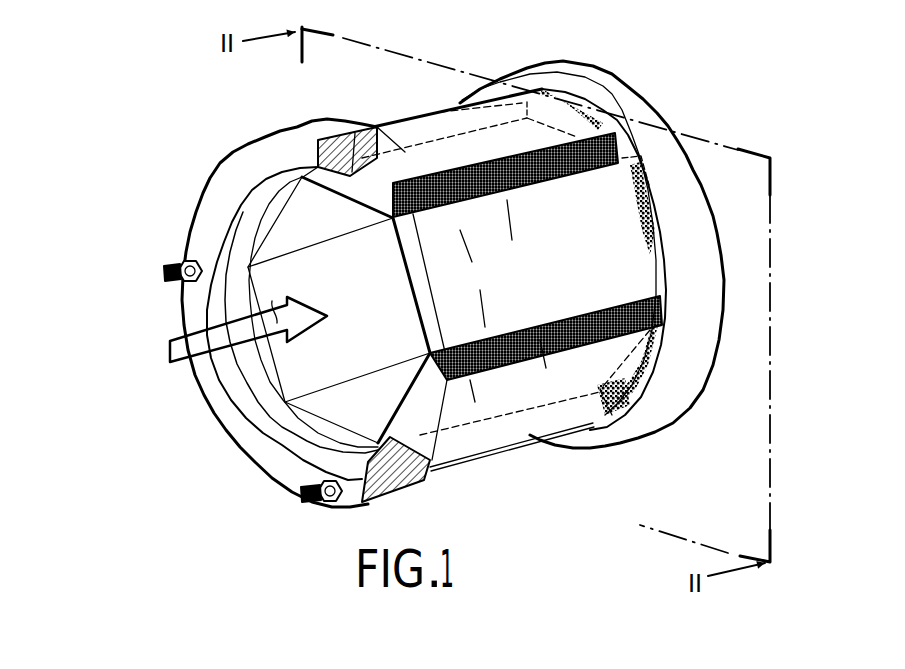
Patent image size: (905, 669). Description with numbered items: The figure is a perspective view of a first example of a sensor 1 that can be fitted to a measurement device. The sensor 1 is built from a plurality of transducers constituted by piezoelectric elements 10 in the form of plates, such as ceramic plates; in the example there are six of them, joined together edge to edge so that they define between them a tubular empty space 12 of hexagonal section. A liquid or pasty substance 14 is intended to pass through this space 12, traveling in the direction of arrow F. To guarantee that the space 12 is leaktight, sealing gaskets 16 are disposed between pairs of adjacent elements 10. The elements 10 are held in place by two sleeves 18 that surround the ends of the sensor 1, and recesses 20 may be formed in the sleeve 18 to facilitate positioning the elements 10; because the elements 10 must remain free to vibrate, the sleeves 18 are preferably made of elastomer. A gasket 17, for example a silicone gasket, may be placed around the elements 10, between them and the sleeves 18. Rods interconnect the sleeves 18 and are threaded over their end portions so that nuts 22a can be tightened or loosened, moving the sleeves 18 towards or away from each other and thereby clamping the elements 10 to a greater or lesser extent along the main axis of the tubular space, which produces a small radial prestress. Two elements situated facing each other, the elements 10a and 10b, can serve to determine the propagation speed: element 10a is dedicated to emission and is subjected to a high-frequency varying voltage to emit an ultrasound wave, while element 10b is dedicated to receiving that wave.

The sensor 1 is at (449, 281).
The piezoelectric elements 10 is at (288, 232).
The emitting piezoelectric element 10a is at (364, 195).
The receiving piezoelectric element 10b is at (335, 433).
The tubular empty space 12 is at (264, 314).
The liquid or pasty substance 14 is at (158, 370).
The sealing gaskets 16 is at (543, 317).
The gasket 17 is at (336, 128).
The sleeves 18 is at (237, 152).
The recesses 20 is at (440, 108).
The nuts 22a is at (183, 265).